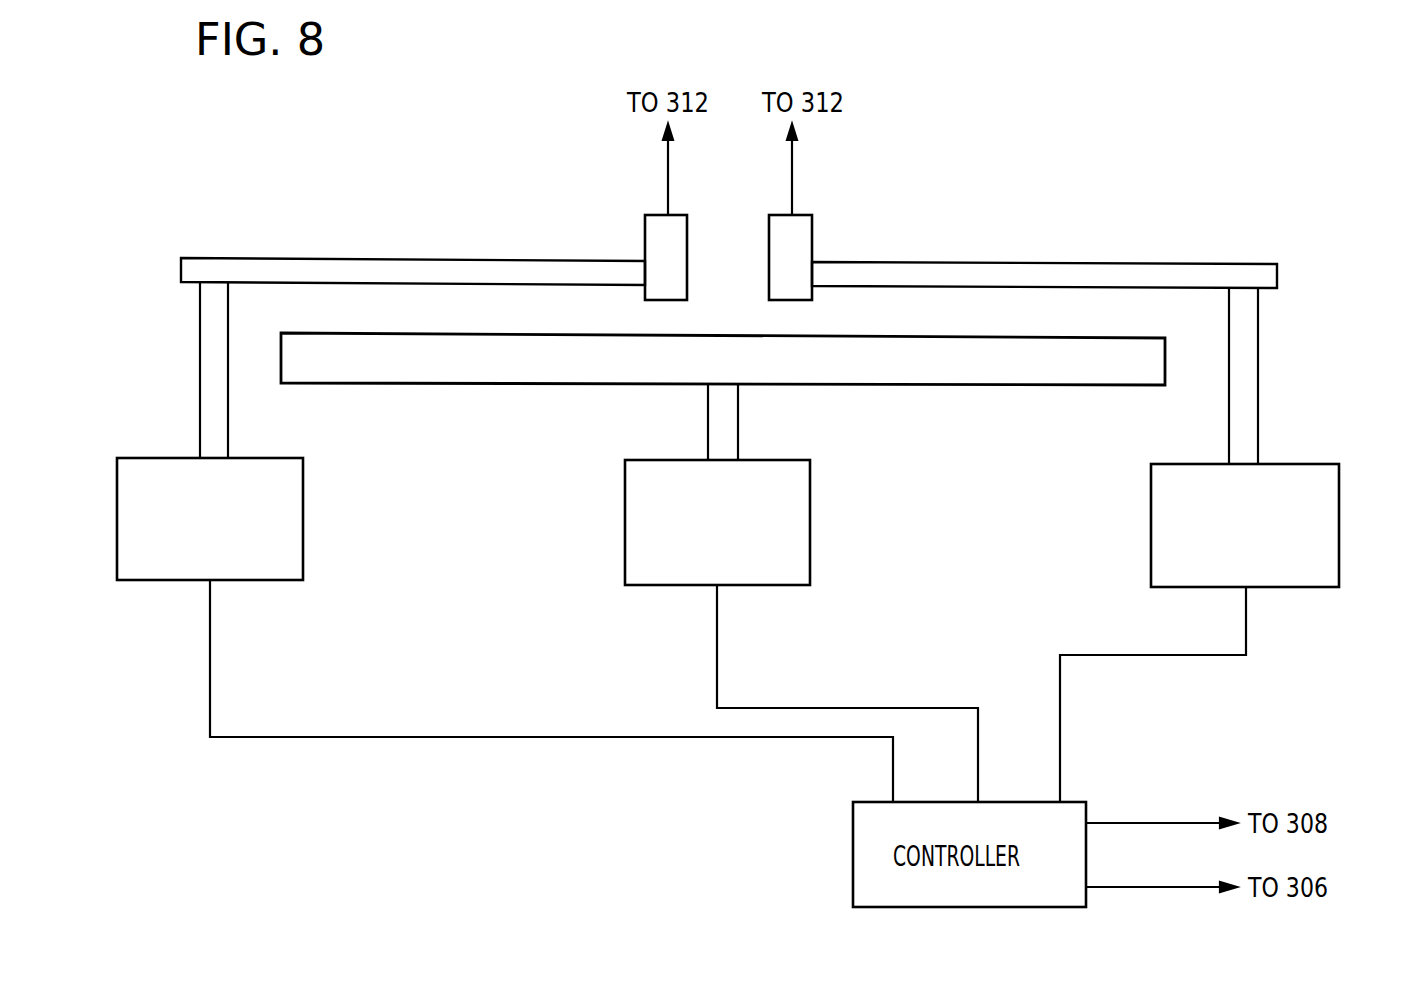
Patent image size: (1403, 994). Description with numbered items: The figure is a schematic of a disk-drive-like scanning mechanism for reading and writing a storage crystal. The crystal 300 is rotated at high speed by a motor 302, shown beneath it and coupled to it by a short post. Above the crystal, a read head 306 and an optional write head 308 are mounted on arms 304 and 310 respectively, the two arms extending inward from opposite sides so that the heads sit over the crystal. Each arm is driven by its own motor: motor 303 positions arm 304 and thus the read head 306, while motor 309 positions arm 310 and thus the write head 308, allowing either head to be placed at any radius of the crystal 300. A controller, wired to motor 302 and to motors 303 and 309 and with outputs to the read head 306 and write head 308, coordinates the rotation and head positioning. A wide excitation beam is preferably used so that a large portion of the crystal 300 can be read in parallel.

The crystal 300 is at (920, 385).
The motor 302 is at (810, 487).
The motor 303 is at (1339, 494).
The arm 304 is at (1018, 262).
The read head 306 is at (812, 245).
The write head 308 is at (645, 243).
The motor 309 is at (303, 489).
The arm 310 is at (430, 258).